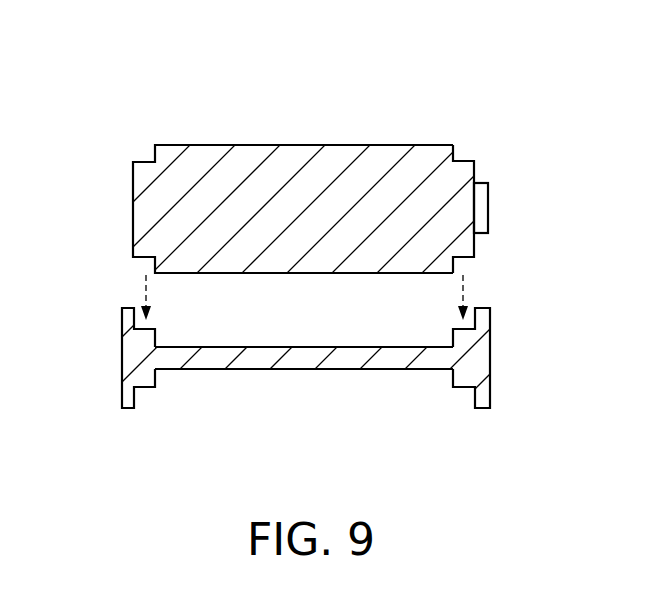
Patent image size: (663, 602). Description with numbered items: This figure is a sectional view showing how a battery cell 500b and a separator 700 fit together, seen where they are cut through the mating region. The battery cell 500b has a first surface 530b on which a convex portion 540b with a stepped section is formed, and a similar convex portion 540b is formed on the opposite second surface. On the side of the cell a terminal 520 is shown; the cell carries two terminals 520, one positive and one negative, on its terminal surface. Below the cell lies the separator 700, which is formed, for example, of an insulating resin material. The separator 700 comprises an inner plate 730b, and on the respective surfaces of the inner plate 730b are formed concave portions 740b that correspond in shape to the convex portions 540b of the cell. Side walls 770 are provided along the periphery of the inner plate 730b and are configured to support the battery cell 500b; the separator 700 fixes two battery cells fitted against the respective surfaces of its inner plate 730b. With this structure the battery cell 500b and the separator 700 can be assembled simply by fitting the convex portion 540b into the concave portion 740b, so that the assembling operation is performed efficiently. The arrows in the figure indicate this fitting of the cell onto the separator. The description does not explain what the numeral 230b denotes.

The battery cell 500b is at (306, 165).
The convex portion 540b is at (350, 144).
The first surface 530b is at (460, 158).
The terminal 520 is at (489, 206).
The separator 700 is at (301, 392).
The side wall 770 is at (121, 360).
The concave portion 740b is at (398, 346).
The inner plate 730b is at (226, 333).
The substrate 230b is at (394, 398).